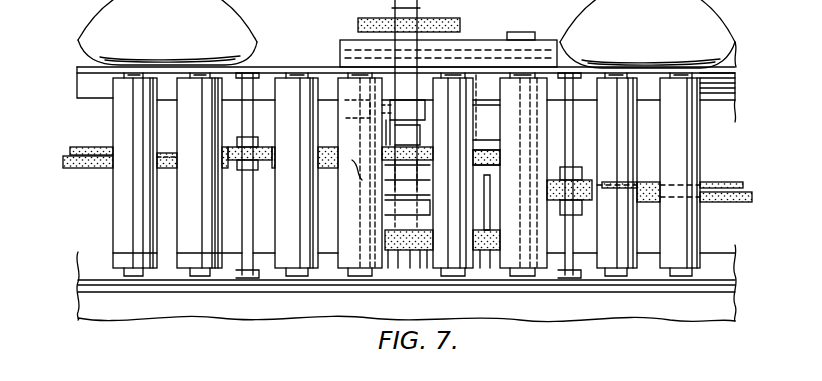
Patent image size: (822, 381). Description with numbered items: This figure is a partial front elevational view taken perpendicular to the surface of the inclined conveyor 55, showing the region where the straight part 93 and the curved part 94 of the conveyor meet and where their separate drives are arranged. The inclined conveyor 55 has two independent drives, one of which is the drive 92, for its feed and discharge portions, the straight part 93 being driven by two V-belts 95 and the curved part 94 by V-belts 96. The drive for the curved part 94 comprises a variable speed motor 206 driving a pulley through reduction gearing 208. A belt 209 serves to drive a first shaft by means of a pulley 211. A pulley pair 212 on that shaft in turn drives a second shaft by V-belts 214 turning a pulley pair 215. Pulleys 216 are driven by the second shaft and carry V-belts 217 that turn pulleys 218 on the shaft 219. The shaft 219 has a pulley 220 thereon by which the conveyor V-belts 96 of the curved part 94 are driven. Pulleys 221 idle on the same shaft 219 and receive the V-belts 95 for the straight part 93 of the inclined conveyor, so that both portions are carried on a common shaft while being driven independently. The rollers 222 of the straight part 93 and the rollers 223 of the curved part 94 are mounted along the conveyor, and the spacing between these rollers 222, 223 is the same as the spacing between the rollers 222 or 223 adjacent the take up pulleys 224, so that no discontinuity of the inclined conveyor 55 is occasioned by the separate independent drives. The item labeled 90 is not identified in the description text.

The lamp 90 is at (406, 34).
The straight part 93 is at (77, 83).
The curved part 94 is at (732, 82).
The drive 92 is at (100, 283).
The V-belts 95 is at (65, 162).
The V-belts 96 is at (752, 192).
The inclined conveyor 55 is at (703, 132).
The variable speed motor 206 is at (335, 158).
The reduction gearing 208 is at (340, 53).
The belt 209 is at (460, 25).
The pulley 211 is at (358, 24).
The pulley pair 212 is at (363, 107).
The V-belts 214 is at (490, 117).
The pulley pair 215 is at (545, 113).
The pulleys 216 is at (490, 248).
The V-belts 217 is at (488, 247).
The pulleys 218 is at (390, 250).
The shaft 219 is at (423, 252).
The pulley 220 is at (390, 203).
The pulleys 221 is at (370, 167).
The rollers 222 is at (122, 227).
The rollers 223 is at (476, 95).
The take up pulleys 224 is at (342, 160).